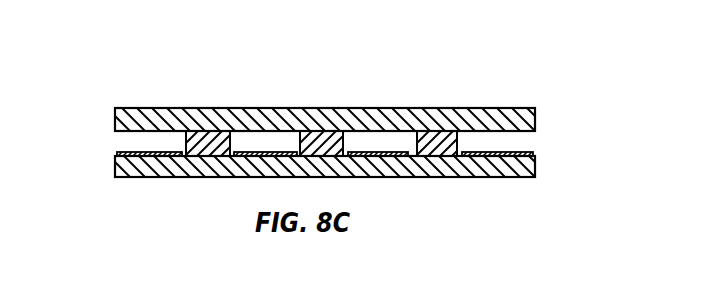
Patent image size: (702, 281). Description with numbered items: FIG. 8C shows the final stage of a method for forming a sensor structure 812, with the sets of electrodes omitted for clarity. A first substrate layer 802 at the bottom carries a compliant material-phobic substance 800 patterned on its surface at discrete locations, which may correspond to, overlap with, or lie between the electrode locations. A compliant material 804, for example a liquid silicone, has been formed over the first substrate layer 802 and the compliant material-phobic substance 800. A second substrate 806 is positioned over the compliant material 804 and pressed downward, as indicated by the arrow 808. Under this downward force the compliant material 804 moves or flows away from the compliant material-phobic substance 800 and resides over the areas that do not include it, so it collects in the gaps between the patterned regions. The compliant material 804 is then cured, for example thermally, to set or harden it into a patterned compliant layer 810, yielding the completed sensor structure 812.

The compliant material-phobic substance 800 is at (535, 157).
The first substrate layer 802 is at (115, 168).
The compliant material 804 is at (457, 141).
The second substrate 806 is at (115, 117).
The arrow 808 is at (320, 47).
The patterned compliant layer 810 is at (170, 143).
The sensor structure 812 is at (517, 93).